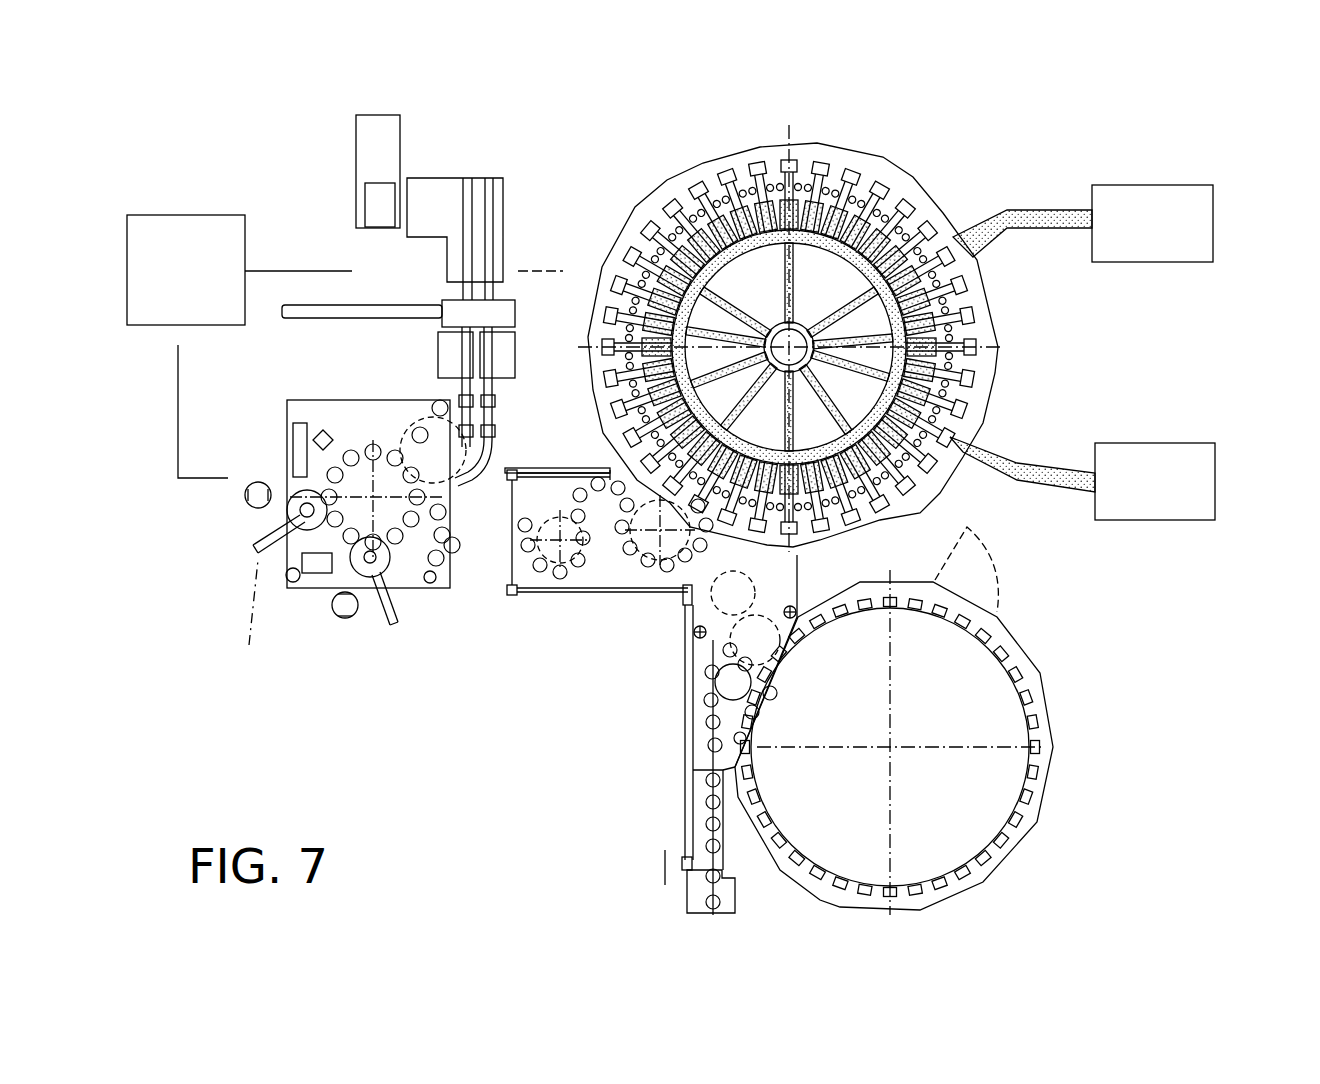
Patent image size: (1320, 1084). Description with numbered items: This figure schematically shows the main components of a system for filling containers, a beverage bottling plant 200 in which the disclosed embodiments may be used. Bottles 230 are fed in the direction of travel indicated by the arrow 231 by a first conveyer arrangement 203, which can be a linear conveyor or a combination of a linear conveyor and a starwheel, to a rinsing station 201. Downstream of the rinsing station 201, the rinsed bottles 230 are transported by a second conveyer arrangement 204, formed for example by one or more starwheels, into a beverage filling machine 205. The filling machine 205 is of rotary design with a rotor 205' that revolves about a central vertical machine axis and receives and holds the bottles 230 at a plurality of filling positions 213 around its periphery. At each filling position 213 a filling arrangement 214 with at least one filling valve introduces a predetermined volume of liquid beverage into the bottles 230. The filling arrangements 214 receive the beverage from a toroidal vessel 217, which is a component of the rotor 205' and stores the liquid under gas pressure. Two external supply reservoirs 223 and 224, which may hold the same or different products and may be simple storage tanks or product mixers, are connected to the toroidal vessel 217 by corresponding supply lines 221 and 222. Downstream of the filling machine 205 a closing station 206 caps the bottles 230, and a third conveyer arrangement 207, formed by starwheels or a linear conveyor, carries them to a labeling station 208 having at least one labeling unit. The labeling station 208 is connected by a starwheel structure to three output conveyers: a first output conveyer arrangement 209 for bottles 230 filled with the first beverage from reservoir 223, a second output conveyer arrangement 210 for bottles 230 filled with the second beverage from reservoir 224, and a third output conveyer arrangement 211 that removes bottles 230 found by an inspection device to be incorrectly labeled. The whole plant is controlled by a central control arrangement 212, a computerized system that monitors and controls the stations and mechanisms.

The filling machine 200 is at (657, 160).
The rinsing station 201 is at (1065, 636).
The first conveyer arrangement 203 is at (727, 836).
The second conveyer arrangement 204 is at (697, 660).
The beverage filling machine 205 is at (1021, 343).
The rotor 205' is at (925, 189).
The closing station 206 is at (575, 470).
The third conveyer arrangement 207 is at (522, 612).
The labeling station 208 is at (320, 628).
The first output conveyer arrangement 209 is at (498, 300).
The second output conveyer arrangement 210 is at (463, 297).
The third output conveyer arrangement 211 is at (300, 320).
The central control arrangement 212 is at (207, 286).
The filling positions 213 is at (977, 271).
The filling arrangement 214 is at (985, 373).
The toroidal vessel 217 is at (920, 515).
The supply line 221 is at (1035, 208).
The supply line 222 is at (1043, 463).
The external supply reservoir 223 is at (1212, 235).
The external supply reservoir 224 is at (1215, 490).
The bottles 230 is at (717, 848).
The arrow 231 is at (665, 825).